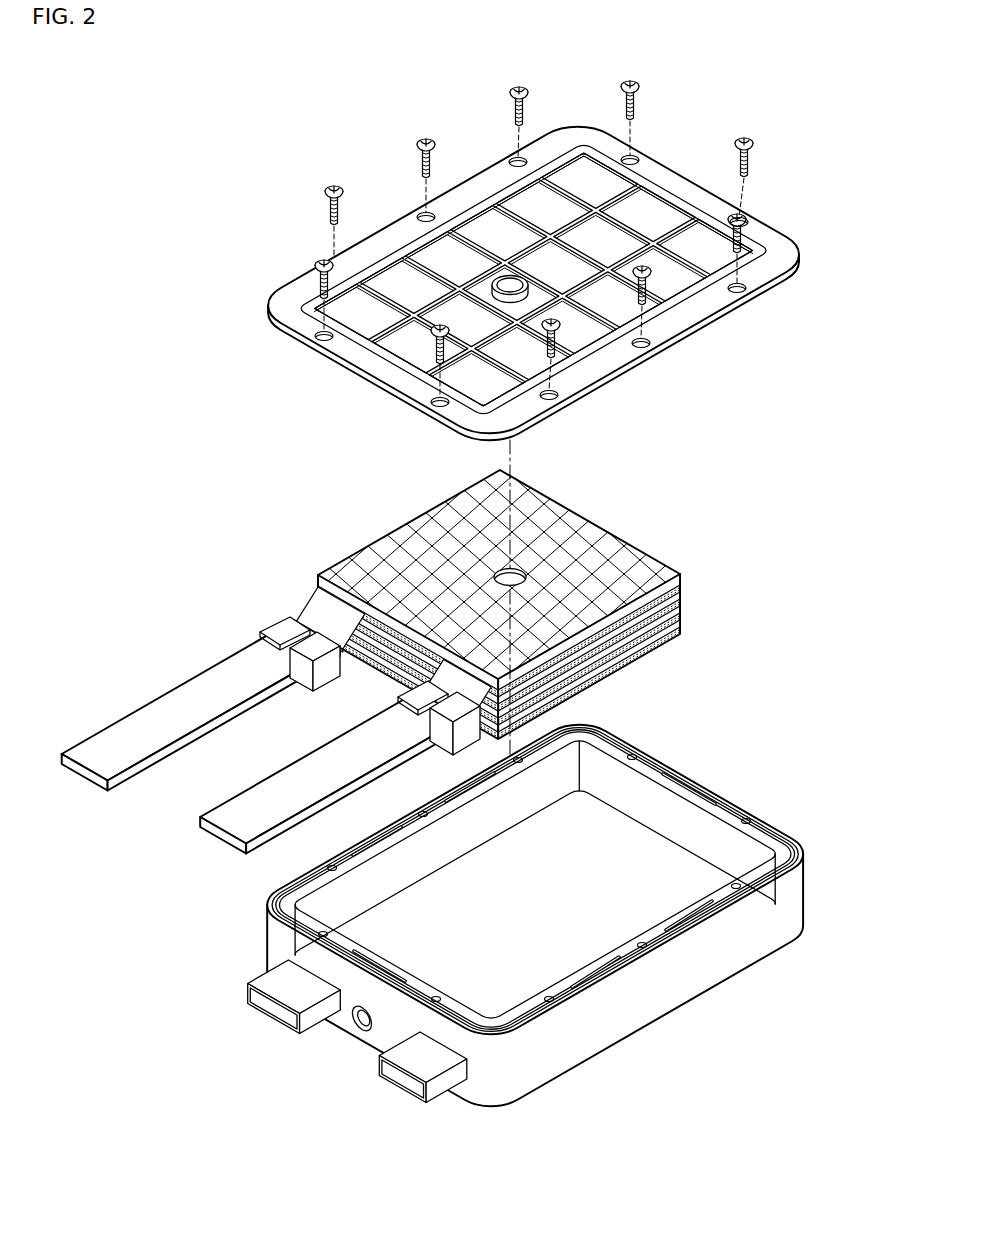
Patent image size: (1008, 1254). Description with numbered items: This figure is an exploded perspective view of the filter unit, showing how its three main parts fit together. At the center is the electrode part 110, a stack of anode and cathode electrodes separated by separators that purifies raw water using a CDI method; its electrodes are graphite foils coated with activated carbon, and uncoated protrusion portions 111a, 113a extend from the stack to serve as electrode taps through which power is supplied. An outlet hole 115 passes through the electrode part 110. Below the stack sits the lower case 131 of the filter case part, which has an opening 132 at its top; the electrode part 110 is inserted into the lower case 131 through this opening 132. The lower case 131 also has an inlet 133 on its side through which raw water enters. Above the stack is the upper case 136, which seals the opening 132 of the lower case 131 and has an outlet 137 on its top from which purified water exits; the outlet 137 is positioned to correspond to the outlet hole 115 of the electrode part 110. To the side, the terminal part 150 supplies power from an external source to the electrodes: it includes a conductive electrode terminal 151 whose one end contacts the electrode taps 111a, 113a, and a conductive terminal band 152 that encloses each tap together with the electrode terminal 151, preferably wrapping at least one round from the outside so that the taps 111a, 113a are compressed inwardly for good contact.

The electrode part 110 is at (493, 598).
The protrusion portion (electrode tap of the anode) 111a is at (505, 690).
The protrusion portion (electrode tap of the cathode) 113a is at (306, 602).
The outlet hole 115 is at (524, 573).
The lower case 131 is at (570, 915).
The opening 132 is at (641, 859).
The inlet 133 is at (347, 1029).
The upper case 136 is at (789, 251).
The outlet 137 is at (511, 282).
The terminal part 150 is at (271, 704).
The electrode terminal 151 is at (120, 730).
The terminal band 152 is at (349, 656).